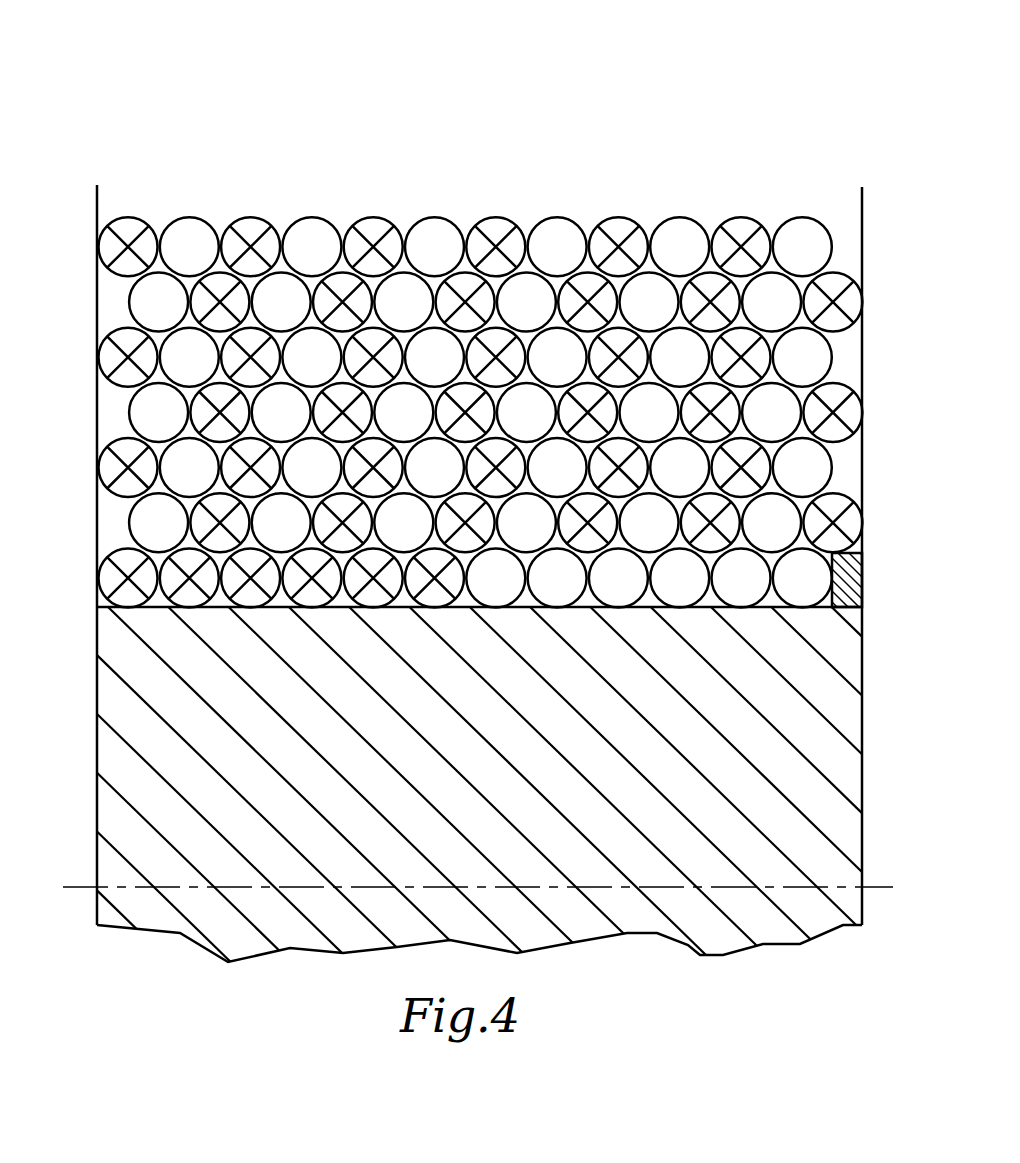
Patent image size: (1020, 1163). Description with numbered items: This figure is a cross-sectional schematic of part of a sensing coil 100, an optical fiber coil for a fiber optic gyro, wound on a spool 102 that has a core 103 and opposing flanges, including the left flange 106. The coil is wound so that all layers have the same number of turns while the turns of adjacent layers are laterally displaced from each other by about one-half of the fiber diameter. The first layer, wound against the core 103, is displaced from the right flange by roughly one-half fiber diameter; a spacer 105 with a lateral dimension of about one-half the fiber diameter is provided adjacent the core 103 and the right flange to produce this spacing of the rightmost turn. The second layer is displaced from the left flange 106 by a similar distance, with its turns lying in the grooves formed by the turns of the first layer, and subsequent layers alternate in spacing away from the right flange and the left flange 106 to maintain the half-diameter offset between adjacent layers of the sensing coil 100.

The sensing coil 100 is at (452, 85).
The spool 102 is at (97, 793).
The core 103 is at (852, 718).
The spacer 105 is at (862, 608).
The left flange 106 is at (97, 388).